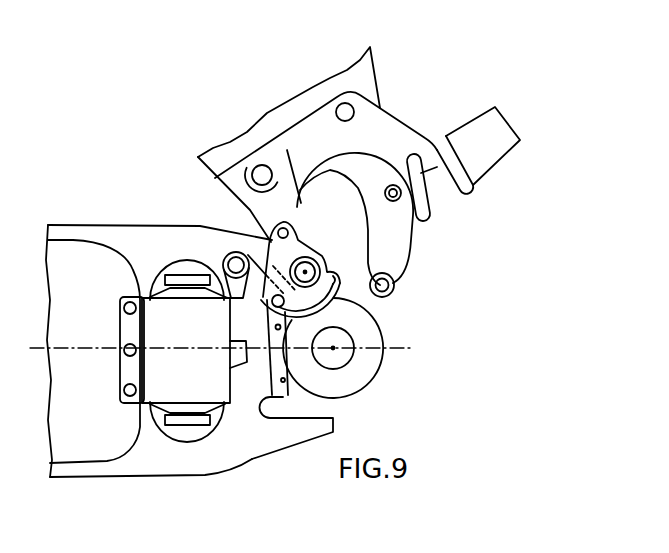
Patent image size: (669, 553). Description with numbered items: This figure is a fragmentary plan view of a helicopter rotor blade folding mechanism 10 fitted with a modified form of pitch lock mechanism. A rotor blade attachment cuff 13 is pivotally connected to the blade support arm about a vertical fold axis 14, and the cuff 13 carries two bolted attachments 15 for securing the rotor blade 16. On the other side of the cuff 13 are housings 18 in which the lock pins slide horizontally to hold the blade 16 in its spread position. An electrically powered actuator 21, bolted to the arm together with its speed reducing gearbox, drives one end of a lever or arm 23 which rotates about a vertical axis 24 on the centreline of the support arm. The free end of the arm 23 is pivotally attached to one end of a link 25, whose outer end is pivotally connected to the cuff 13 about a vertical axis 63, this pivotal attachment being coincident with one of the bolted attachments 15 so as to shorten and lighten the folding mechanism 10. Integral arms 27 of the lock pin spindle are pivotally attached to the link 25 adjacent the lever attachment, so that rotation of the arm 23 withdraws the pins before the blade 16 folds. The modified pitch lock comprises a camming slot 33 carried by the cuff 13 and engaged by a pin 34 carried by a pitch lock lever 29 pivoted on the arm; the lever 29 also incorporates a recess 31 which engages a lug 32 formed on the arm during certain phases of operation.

The blade folding mechanism 10 is at (458, 348).
The rotor blade attachment cuff 13 is at (307, 123).
The vertical fold axis 14 is at (305, 272).
The bolted attachments 15 is at (257, 173).
The rotor blade 16 is at (368, 85).
The housings 18 is at (482, 158).
The electrically powered actuator 21 is at (370, 360).
The arm (lever) 23 is at (343, 297).
The vertical axis 24 is at (333, 348).
The link 25 is at (412, 245).
The integral arms 27 is at (423, 185).
The pitch lock lever 29 is at (237, 297).
The recess 31 is at (243, 400).
The lug 32 is at (233, 353).
The camming slot 33 is at (333, 291).
The pin 34 is at (277, 305).
The vertical axis (pivotal attachment) 63 is at (345, 112).